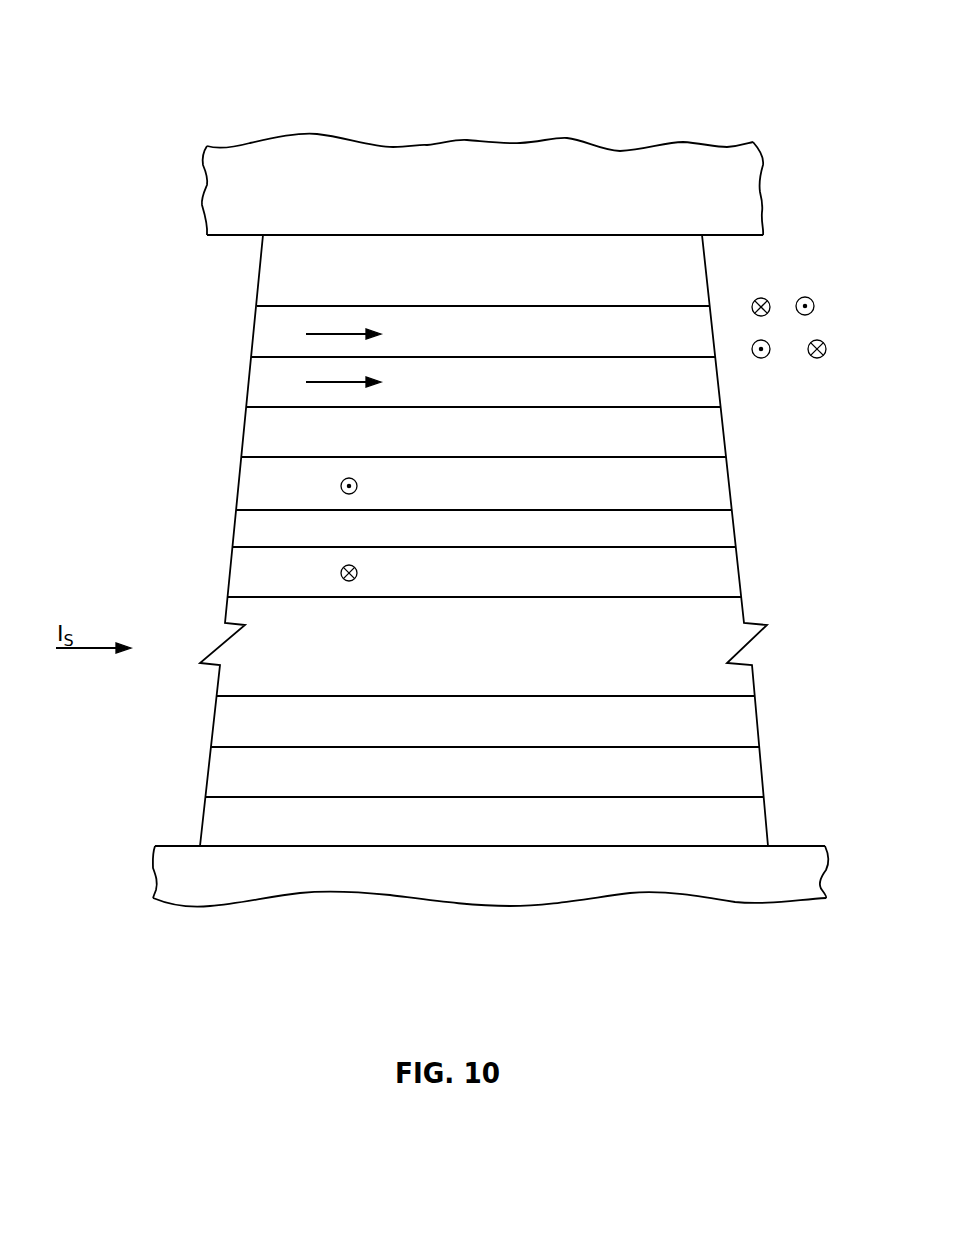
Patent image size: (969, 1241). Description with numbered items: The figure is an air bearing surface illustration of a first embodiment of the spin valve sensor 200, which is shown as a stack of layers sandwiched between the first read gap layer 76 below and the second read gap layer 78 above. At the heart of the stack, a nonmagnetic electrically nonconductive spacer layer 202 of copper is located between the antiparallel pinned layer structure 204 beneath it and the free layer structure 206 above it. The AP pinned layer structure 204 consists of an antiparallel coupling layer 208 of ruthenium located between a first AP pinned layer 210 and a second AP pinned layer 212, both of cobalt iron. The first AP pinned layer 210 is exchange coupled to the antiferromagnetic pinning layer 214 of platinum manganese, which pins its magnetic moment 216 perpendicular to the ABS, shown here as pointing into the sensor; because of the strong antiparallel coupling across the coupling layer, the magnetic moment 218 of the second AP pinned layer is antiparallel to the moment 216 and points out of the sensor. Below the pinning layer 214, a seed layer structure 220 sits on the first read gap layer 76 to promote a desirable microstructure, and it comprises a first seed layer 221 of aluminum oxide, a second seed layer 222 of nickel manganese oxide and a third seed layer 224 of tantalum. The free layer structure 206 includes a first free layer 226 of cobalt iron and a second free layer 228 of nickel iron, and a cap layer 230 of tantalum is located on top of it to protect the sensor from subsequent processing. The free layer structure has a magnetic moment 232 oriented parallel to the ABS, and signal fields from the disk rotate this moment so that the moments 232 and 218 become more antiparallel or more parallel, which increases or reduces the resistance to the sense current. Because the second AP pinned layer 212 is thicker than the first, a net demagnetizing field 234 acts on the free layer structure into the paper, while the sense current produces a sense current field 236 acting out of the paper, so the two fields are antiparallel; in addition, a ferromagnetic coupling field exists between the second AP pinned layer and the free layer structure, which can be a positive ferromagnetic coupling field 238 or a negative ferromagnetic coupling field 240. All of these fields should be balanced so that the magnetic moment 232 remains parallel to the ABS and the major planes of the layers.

The spin valve sensor 200 is at (18, 233).
The spacer layer 202 is at (681, 450).
The antiparallel pinned layer structure 204 is at (91, 597).
The free layer structure 206 is at (163, 407).
The antiparallel coupling layer 208 is at (681, 542).
The first antiparallel pinned layer 210 is at (681, 588).
The second antiparallel pinned layer 212 is at (681, 497).
The antiferromagnetic pinning layer 214 is at (681, 664).
The magnetic moment of the first AP pinned layer 216 is at (340, 573).
The magnetic moment of the second AP pinned layer 218 is at (340, 486).
The seed layer structure 220 is at (206, 696).
The first seed layer 221 is at (681, 835).
The second seed layer 222 is at (681, 784).
The third seed layer 224 is at (681, 734).
The first free layer 226 is at (681, 394).
The second free layer 228 is at (681, 349).
The cap layer 230 is at (681, 289).
The magnetic moment of the free layer structure 232 is at (330, 382).
The net demagnetizing field 234 is at (765, 297).
The sense current field 236 is at (814, 299).
The positive ferromagnetic coupling field 238 is at (757, 358).
The negative ferromagnetic coupling field 240 is at (823, 358).
The first read gap layer 76 is at (783, 893).
The second read gap layer 78 is at (755, 168).